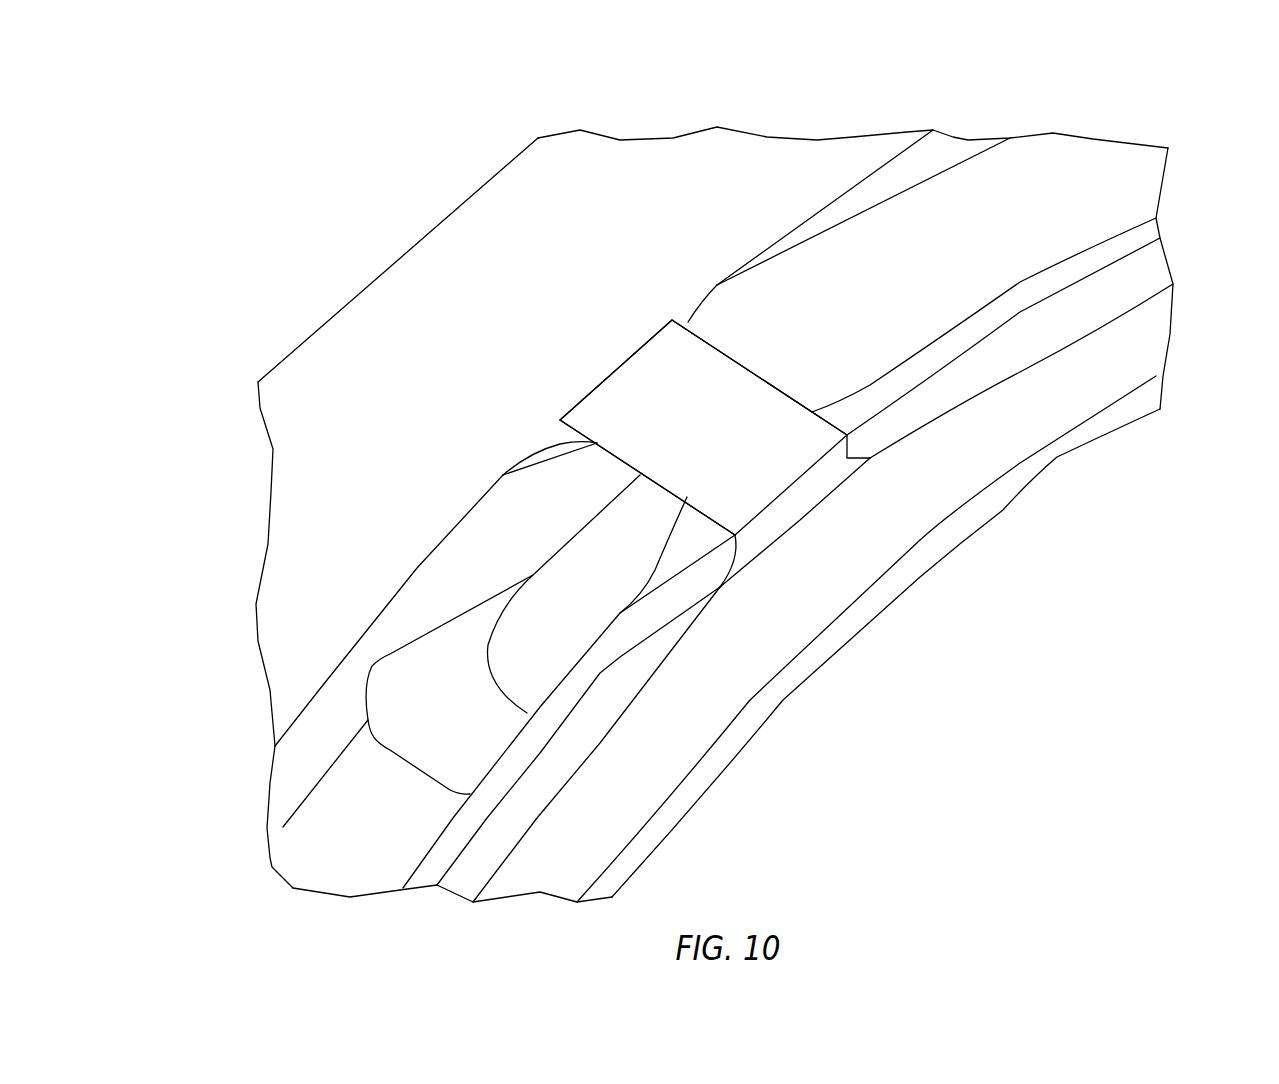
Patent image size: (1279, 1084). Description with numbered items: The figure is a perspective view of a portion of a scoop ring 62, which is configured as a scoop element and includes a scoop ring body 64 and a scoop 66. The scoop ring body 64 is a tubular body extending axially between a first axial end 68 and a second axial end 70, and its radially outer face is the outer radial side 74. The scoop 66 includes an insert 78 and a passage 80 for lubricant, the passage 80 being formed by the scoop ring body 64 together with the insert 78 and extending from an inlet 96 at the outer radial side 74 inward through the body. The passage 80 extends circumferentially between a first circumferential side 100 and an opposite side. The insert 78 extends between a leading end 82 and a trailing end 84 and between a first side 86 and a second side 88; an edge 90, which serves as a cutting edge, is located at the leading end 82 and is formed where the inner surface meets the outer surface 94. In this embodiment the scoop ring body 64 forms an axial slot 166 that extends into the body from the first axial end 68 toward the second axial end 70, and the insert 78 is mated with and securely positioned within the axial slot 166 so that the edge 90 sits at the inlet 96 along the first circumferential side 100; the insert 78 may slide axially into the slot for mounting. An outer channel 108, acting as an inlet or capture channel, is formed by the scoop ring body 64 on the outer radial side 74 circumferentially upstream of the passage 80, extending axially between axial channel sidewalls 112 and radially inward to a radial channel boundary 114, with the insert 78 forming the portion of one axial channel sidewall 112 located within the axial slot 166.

The scoop ring 62 is at (1140, 224).
The scoop ring body 64 is at (710, 163).
The scoop 66 is at (302, 522).
The first axial end 68 is at (1146, 412).
The second axial end 70 is at (518, 122).
The outer radial side 74 is at (827, 143).
The insert 78 is at (668, 392).
The passage 80 is at (509, 505).
The leading end 82 is at (553, 435).
The trailing end 84 is at (722, 330).
The first side 86 is at (768, 531).
The second side 88 is at (582, 362).
The edge 90 is at (623, 462).
The outer surface 94 is at (703, 372).
The inlet 96 is at (482, 472).
The first circumferential side 100 is at (670, 465).
The outer channel 108 is at (992, 163).
The axial channel sidewalls 112 is at (798, 205).
The radial channel boundary 114 is at (1057, 180).
The axial slot 166 is at (820, 500).